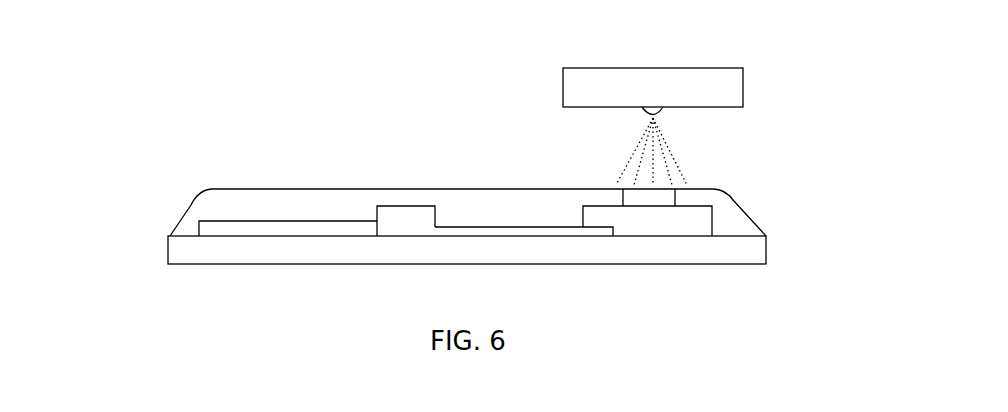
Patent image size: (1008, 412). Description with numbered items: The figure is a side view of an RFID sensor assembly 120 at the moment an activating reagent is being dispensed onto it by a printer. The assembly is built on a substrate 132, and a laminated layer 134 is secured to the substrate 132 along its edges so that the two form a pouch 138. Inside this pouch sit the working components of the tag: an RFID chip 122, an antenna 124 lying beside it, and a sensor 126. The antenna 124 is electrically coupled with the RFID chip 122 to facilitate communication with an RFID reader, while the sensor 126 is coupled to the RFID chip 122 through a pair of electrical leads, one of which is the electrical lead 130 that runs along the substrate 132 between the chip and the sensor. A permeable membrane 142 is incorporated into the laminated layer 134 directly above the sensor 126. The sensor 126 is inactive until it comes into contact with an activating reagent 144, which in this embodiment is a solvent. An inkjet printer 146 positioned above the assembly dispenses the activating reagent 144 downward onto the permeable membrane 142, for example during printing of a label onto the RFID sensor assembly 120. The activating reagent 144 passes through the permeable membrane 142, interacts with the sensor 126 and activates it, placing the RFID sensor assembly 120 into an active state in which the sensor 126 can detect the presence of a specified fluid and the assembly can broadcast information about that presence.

The RFID sensor assembly 120 is at (205, 85).
The RFID chip 122 is at (407, 222).
The antenna 124 is at (290, 228).
The sensor 126 is at (647, 220).
The electrical lead 130 is at (523, 230).
The substrate 132 is at (255, 252).
The laminated layer 134 is at (526, 190).
The pouch 138 is at (192, 223).
The permeable membrane 142 is at (648, 197).
The activating reagent 144 is at (682, 145).
The inkjet printer 146 is at (653, 87).